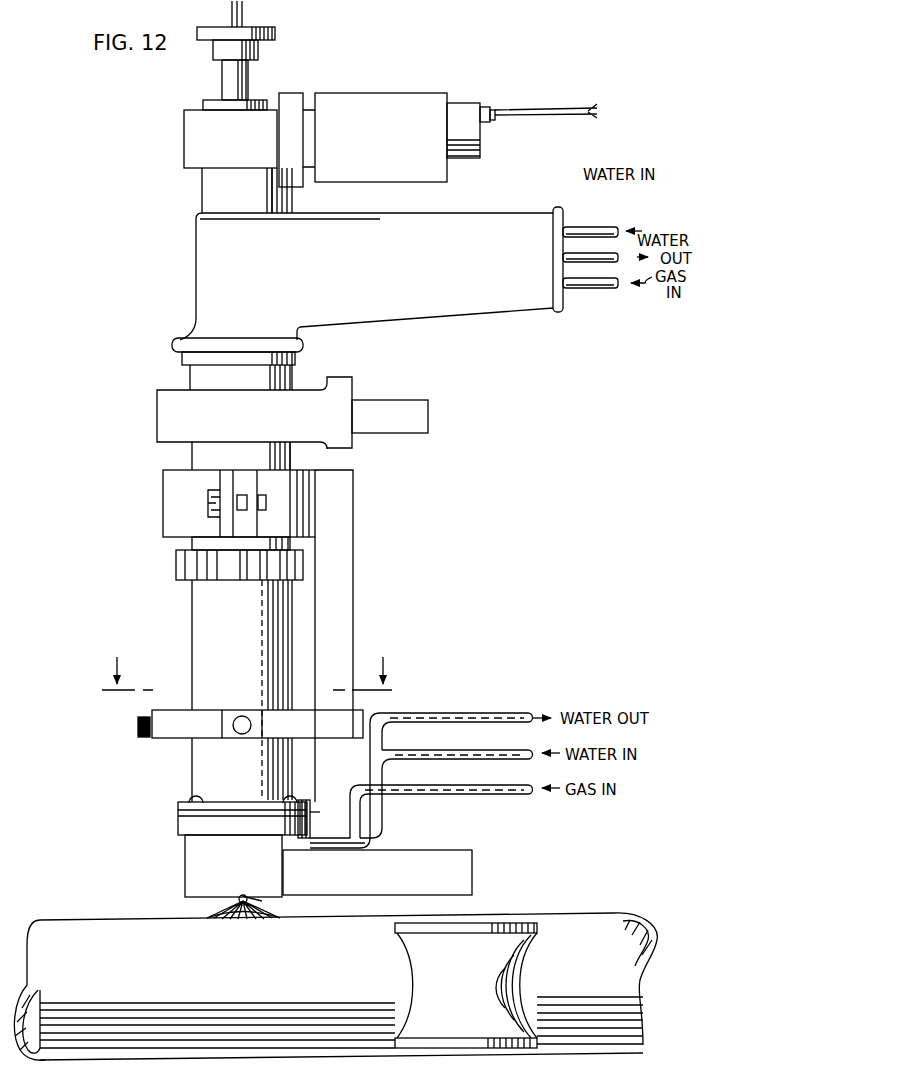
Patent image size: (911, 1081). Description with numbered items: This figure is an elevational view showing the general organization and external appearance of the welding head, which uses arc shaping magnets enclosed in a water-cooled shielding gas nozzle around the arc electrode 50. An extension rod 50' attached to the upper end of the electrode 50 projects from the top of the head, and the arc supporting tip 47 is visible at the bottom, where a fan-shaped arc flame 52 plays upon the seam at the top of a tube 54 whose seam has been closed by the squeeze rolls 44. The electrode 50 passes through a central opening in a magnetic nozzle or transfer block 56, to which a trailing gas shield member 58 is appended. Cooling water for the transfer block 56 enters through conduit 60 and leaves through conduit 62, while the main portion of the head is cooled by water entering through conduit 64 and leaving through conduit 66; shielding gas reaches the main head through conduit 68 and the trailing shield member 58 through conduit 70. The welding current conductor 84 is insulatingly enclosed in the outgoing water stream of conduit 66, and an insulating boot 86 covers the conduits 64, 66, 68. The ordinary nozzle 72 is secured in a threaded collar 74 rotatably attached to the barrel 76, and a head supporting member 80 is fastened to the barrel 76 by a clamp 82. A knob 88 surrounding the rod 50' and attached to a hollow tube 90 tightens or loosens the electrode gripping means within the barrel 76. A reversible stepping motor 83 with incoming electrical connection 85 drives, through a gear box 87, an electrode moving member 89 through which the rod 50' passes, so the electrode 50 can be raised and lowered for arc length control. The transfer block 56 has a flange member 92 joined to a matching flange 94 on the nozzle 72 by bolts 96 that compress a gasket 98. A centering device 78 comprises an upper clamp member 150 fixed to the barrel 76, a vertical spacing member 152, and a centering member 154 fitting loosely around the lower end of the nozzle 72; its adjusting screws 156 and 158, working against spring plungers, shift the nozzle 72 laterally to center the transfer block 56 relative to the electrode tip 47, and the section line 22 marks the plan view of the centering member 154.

The extension rod 50' is at (270, 13).
The knob 88 is at (260, 45).
The hollow tube 90 is at (250, 80).
The electrode moving member 89 is at (195, 145).
The gear box 87 is at (292, 100).
The reversible stepping motor 83 is at (385, 100).
The incoming electrical connection 85 is at (540, 110).
The insulating boot 86 is at (460, 222).
The conduit 64 is at (575, 230).
The conduit 66 is at (580, 262).
The conduit 68 is at (583, 290).
The welding current conductor 84 is at (640, 257).
The barrel 76 is at (195, 372).
The clamp 82 is at (308, 395).
The head supporting member 80 is at (416, 418).
The upper member 150 is at (297, 497).
The centering device 78 is at (360, 521).
The vertical spacing member 152 is at (343, 573).
The threaded collar 74 is at (182, 575).
The nozzle 72 is at (197, 658).
The section line 22 is at (255, 671).
The centering member 154 is at (253, 748).
The adjusting screw 158 is at (243, 716).
The adjusting screw 156 is at (140, 727).
The bolts 96 is at (190, 800).
The flange 94 is at (310, 802).
The gasket 98 is at (312, 820).
The flange member 92 is at (185, 823).
The conduit 62 is at (452, 713).
The conduit 60 is at (452, 750).
The conduit 70 is at (452, 785).
The transfer block 56 is at (190, 856).
The trailing gas shield member 58 is at (465, 875).
The arc electrode 50 is at (229, 876).
The fan-shaped arc flame 52 is at (207, 917).
The arc supporting tip 47 is at (250, 902).
The tube 54 is at (78, 926).
The squeeze rolls 44 is at (448, 1033).